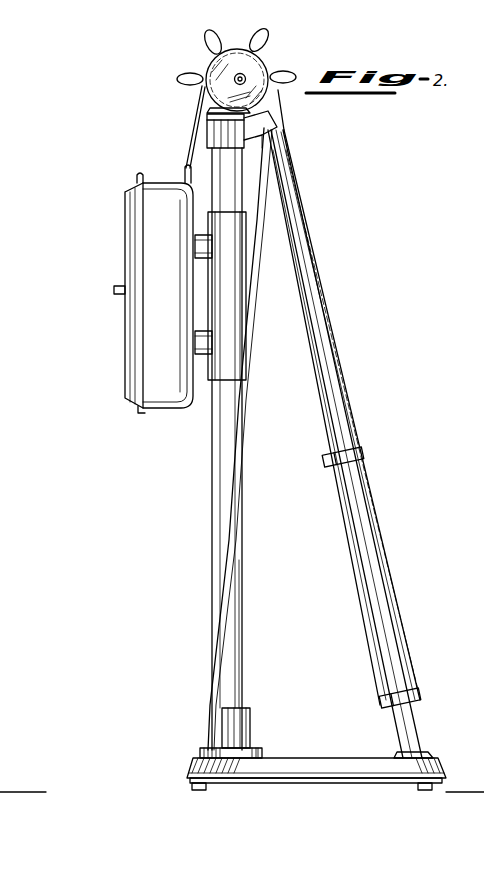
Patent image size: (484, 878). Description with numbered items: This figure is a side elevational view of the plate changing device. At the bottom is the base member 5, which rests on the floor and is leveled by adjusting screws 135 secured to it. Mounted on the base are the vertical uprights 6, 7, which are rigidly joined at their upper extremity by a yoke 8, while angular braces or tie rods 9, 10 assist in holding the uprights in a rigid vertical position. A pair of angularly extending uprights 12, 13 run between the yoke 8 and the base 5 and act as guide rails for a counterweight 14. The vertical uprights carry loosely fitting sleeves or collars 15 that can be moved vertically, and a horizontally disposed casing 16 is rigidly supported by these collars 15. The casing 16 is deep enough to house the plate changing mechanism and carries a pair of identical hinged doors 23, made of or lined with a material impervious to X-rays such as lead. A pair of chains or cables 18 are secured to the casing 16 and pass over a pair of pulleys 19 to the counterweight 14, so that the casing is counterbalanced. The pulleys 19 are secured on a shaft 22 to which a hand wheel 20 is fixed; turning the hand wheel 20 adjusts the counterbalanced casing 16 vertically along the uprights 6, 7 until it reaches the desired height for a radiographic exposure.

The base member 5 is at (300, 771).
The upright 6 is at (244, 618).
The upright 7 is at (241, 593).
The yoke 8 is at (206, 140).
The angular brace or tie rod 9 is at (211, 553).
The angular brace or tie rod 10 is at (236, 488).
The angularly extending upright 12 is at (341, 434).
The angularly extending upright 13 is at (343, 398).
The counterweight 14 is at (349, 553).
The sleeve or collar 15 is at (232, 309).
The casing 16 is at (142, 409).
The chain or cable 18 is at (291, 422).
The pulley 19 is at (233, 60).
The hand wheel 20 is at (207, 47).
The shaft 22 is at (245, 76).
The hinged door 23 is at (125, 318).
The adjusting screw 135 is at (195, 786).